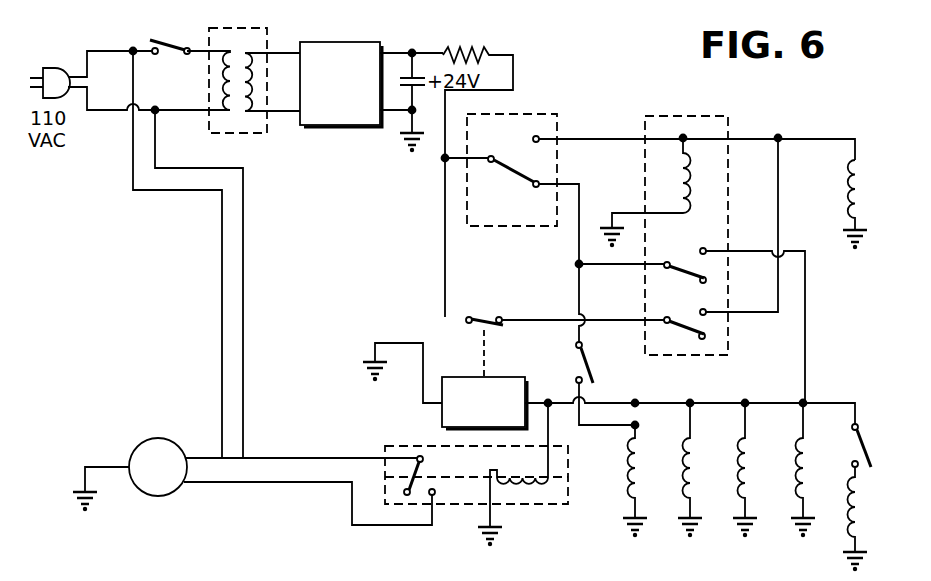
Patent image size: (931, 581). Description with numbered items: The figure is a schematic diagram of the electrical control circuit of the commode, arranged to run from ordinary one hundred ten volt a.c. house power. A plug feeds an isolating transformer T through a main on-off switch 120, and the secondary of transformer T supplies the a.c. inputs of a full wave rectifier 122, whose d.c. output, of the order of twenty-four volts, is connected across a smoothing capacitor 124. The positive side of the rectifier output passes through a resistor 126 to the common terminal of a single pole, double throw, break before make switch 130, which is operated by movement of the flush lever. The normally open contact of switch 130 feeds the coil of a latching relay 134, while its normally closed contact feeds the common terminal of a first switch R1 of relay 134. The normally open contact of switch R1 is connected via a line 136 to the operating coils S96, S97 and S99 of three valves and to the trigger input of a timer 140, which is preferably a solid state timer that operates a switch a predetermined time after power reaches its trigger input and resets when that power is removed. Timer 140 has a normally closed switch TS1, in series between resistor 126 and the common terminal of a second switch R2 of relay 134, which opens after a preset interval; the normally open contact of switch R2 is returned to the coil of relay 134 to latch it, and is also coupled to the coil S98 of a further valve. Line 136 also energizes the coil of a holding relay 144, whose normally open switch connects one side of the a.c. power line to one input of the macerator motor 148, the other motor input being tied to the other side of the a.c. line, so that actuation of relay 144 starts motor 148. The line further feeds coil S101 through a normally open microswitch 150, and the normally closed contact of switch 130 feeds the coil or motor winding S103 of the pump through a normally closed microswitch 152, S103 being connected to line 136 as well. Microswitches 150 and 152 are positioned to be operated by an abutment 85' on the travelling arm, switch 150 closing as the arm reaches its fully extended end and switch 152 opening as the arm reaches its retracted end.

The main on-off switch 120 is at (173, 58).
The isolating transformer T is at (242, 134).
The full wave rectifier 122 is at (346, 126).
The smoothing capacitor 124 is at (400, 75).
The resistor 126 is at (468, 48).
The single pole, double throw, break before make switch 130 is at (533, 114).
The latching relay 134 is at (664, 217).
The first switch of relay R1 is at (680, 262).
The second switch of relay R2 is at (680, 317).
The line 136 is at (806, 360).
The coil of valve 98 S98 is at (844, 193).
The normally closed switch of timer TS1 is at (492, 312).
The timer 140 is at (457, 378).
The normally closed microswitch 152 is at (588, 363).
The abutment 85' is at (720, 390).
The coil or motor winding S103 is at (624, 478).
The operating coil of valve 96 S96 is at (678, 466).
The operating coil of valve 97 S97 is at (733, 466).
The operating coil of valve 99 S99 is at (794, 466).
The normally open microswitch 150 is at (849, 452).
The coil of valve 101 S101 is at (856, 513).
The holding relay 144 is at (521, 505).
The macerator motor 148 is at (163, 478).